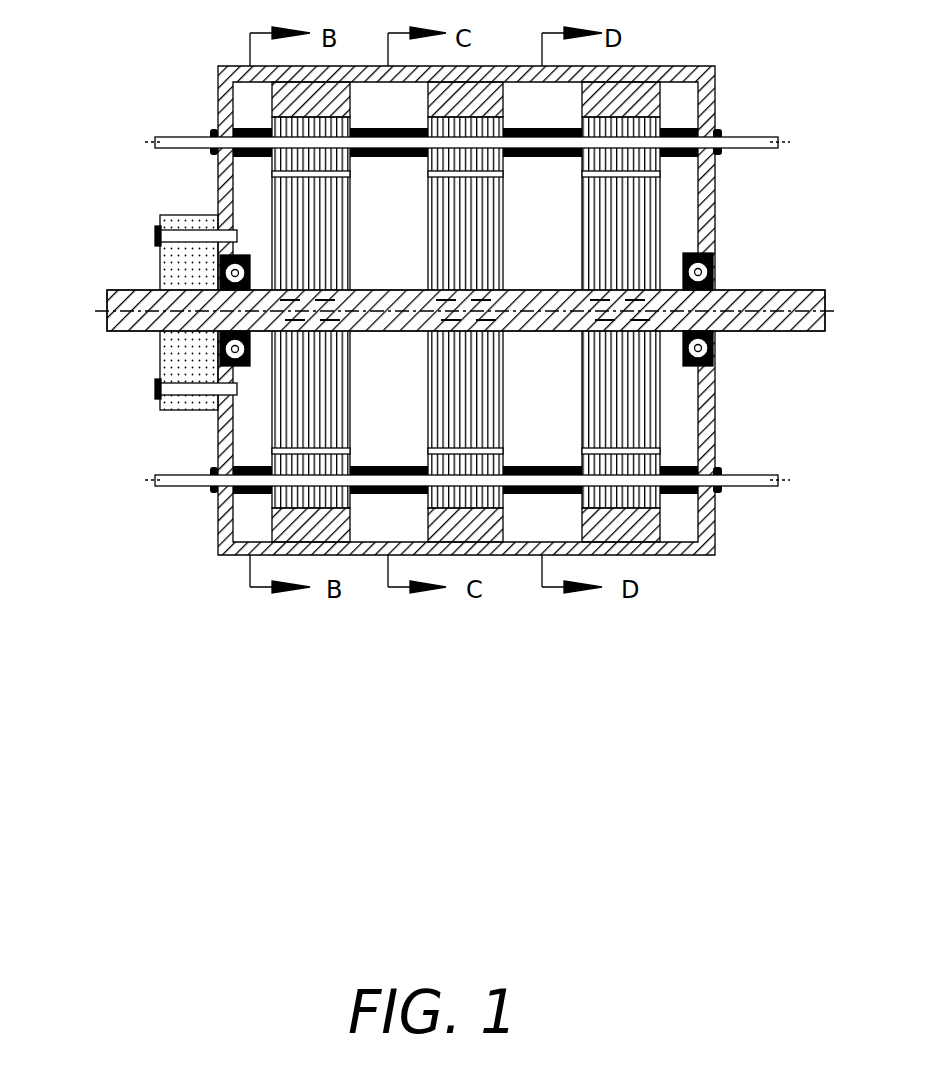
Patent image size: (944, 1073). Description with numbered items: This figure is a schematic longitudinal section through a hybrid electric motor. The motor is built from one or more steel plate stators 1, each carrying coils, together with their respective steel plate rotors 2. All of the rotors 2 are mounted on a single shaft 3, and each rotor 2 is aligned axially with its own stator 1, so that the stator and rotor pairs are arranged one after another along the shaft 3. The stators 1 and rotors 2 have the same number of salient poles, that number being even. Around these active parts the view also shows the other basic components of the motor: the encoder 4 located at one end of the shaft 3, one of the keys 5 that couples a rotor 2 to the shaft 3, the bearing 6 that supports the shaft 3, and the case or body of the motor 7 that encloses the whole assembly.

The steel plate stator 1 is at (620, 495).
The steel plate rotor 2 is at (305, 380).
The shaft 3 is at (118, 331).
The encoder 4 is at (187, 275).
The key 5 is at (300, 315).
The bearing 6 is at (712, 253).
The case or body of the motor 7 is at (613, 90).